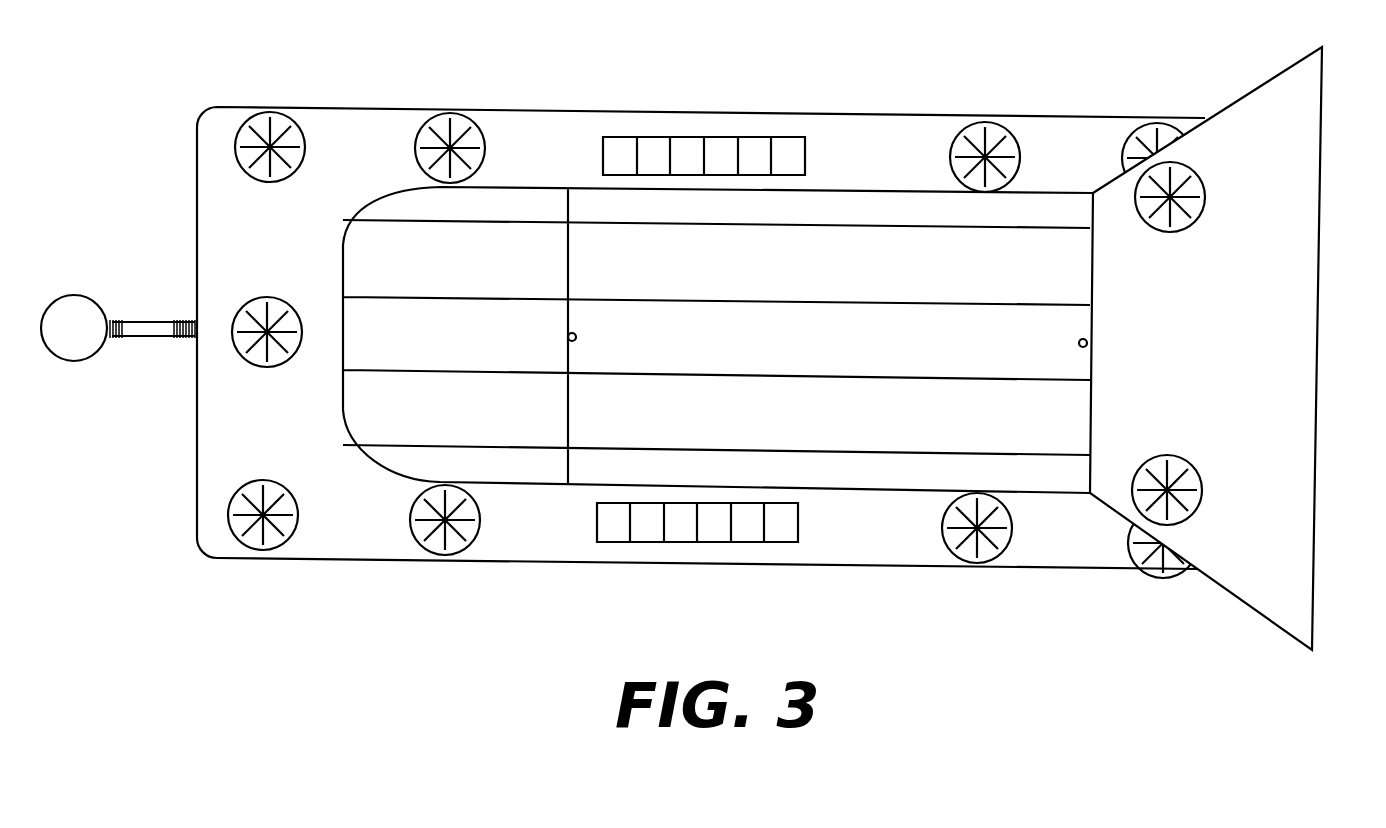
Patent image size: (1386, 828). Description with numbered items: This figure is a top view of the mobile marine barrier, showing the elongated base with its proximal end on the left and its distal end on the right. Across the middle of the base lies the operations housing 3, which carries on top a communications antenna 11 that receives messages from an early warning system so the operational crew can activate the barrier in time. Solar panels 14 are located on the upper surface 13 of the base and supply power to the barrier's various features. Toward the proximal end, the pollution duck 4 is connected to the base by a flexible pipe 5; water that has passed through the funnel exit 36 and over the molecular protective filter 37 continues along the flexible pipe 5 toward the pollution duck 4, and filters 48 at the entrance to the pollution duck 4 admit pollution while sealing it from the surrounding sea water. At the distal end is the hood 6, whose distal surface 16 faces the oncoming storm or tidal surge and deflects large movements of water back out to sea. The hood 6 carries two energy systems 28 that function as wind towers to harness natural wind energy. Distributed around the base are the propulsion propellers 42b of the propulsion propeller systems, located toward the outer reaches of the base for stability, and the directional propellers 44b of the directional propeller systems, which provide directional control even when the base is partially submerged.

The operations housing 3 is at (718, 340).
The pollution duck 4 is at (73, 295).
The flexible pipe 5 is at (146, 322).
The hood 6 is at (1200, 348).
The communications antenna 11 is at (566, 339).
The upper surface 13 is at (267, 415).
The solar panels 14 is at (787, 150).
The distal surface 16 is at (1333, 181).
The energy systems 28 is at (1205, 185).
The funnel exit 36 is at (173, 340).
The molecular protective filter 37 is at (182, 320).
The propulsion propellers 42b is at (277, 108).
The directional propellers 44b is at (473, 108).
The filters 48 is at (117, 320).